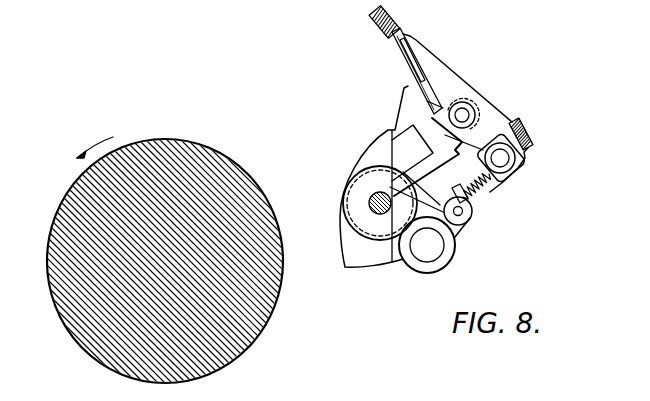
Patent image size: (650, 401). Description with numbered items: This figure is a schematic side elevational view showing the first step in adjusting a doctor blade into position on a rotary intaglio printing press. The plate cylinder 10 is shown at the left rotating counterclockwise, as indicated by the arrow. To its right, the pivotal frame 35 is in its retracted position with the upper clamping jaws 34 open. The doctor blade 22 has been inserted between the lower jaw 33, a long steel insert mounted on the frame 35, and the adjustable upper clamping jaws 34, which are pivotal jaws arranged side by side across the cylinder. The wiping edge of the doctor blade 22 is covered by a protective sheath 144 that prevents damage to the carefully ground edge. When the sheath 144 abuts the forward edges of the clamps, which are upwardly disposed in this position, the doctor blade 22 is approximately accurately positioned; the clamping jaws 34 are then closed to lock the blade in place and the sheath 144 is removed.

The plate cylinder 10 is at (251, 173).
The sheath 144 is at (372, 25).
The doctor blade 22 is at (397, 45).
The lower jaw 33 is at (403, 66).
The upper clamping jaws 34 is at (425, 55).
The frame 35 is at (391, 262).